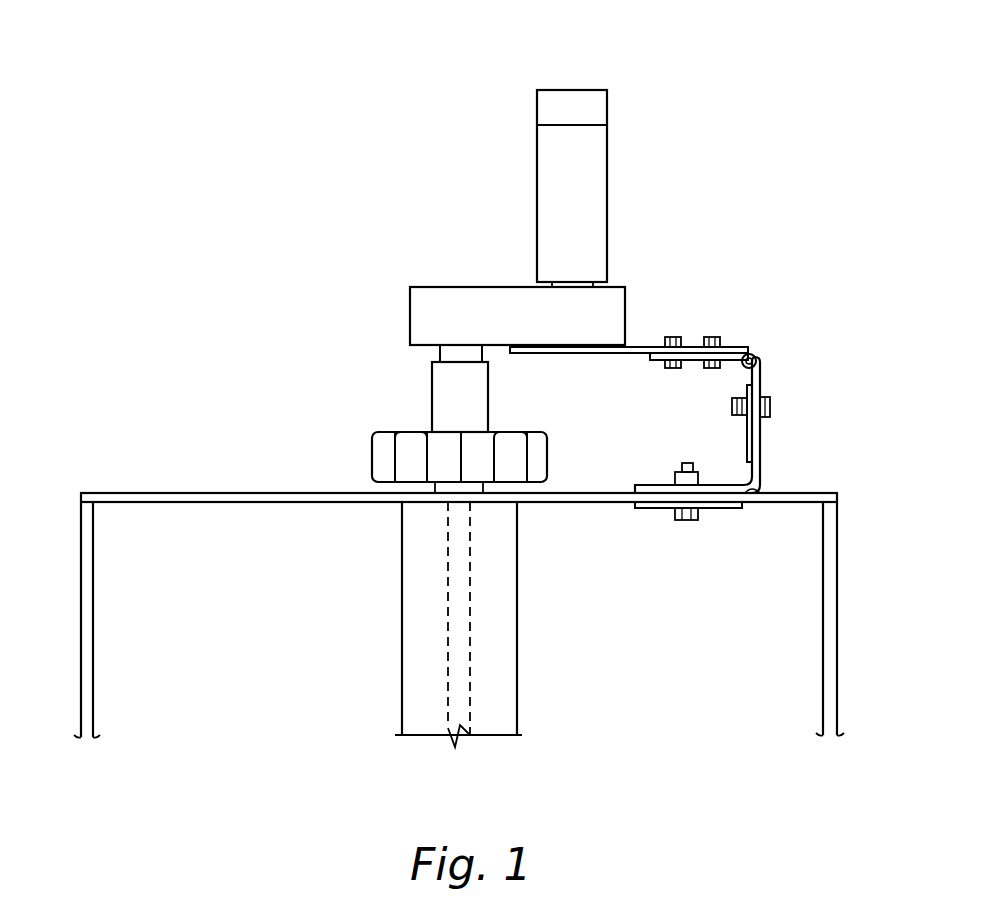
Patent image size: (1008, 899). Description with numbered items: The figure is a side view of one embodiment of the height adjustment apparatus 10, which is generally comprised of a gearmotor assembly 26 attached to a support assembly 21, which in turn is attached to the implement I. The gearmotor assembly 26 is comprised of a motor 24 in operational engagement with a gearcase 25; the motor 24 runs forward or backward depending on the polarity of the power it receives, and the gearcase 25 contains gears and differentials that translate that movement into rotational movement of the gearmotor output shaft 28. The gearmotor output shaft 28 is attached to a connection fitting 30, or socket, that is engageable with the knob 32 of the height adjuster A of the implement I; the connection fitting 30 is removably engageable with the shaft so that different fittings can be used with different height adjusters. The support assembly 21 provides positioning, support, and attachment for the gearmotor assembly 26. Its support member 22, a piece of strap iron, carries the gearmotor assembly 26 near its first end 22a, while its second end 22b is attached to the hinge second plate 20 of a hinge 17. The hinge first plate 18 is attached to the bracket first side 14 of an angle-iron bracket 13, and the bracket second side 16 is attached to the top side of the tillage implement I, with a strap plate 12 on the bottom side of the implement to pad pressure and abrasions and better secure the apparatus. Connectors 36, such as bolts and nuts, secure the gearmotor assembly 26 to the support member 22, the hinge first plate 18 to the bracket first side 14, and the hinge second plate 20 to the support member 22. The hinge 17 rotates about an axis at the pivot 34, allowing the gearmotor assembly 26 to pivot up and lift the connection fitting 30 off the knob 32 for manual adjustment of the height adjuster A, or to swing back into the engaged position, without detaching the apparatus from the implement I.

The height adjustment apparatus 10 is at (458, 140).
The strap plate 12 is at (660, 509).
The bracket 13 is at (755, 488).
The bracket first side 14 is at (757, 476).
The bracket second side 16 is at (655, 483).
The hinge 17 is at (758, 356).
The hinge first plate 18 is at (762, 389).
The hinge second plate 20 is at (655, 361).
The support assembly 21 is at (813, 345).
The support member 22 is at (608, 355).
The first end of support member 22a is at (520, 353).
The second end of support member 22b is at (687, 347).
The motor 24 is at (583, 207).
The gearcase 25 is at (531, 322).
The gearmotor assembly 26 is at (385, 88).
The gearmotor output shaft 28 is at (438, 352).
The connection fitting 30 is at (473, 407).
The knob 32 is at (377, 458).
The pivot 34 is at (749, 354).
The connectors 36 is at (735, 413).
The implement I is at (334, 505).
The height adjuster A is at (470, 603).